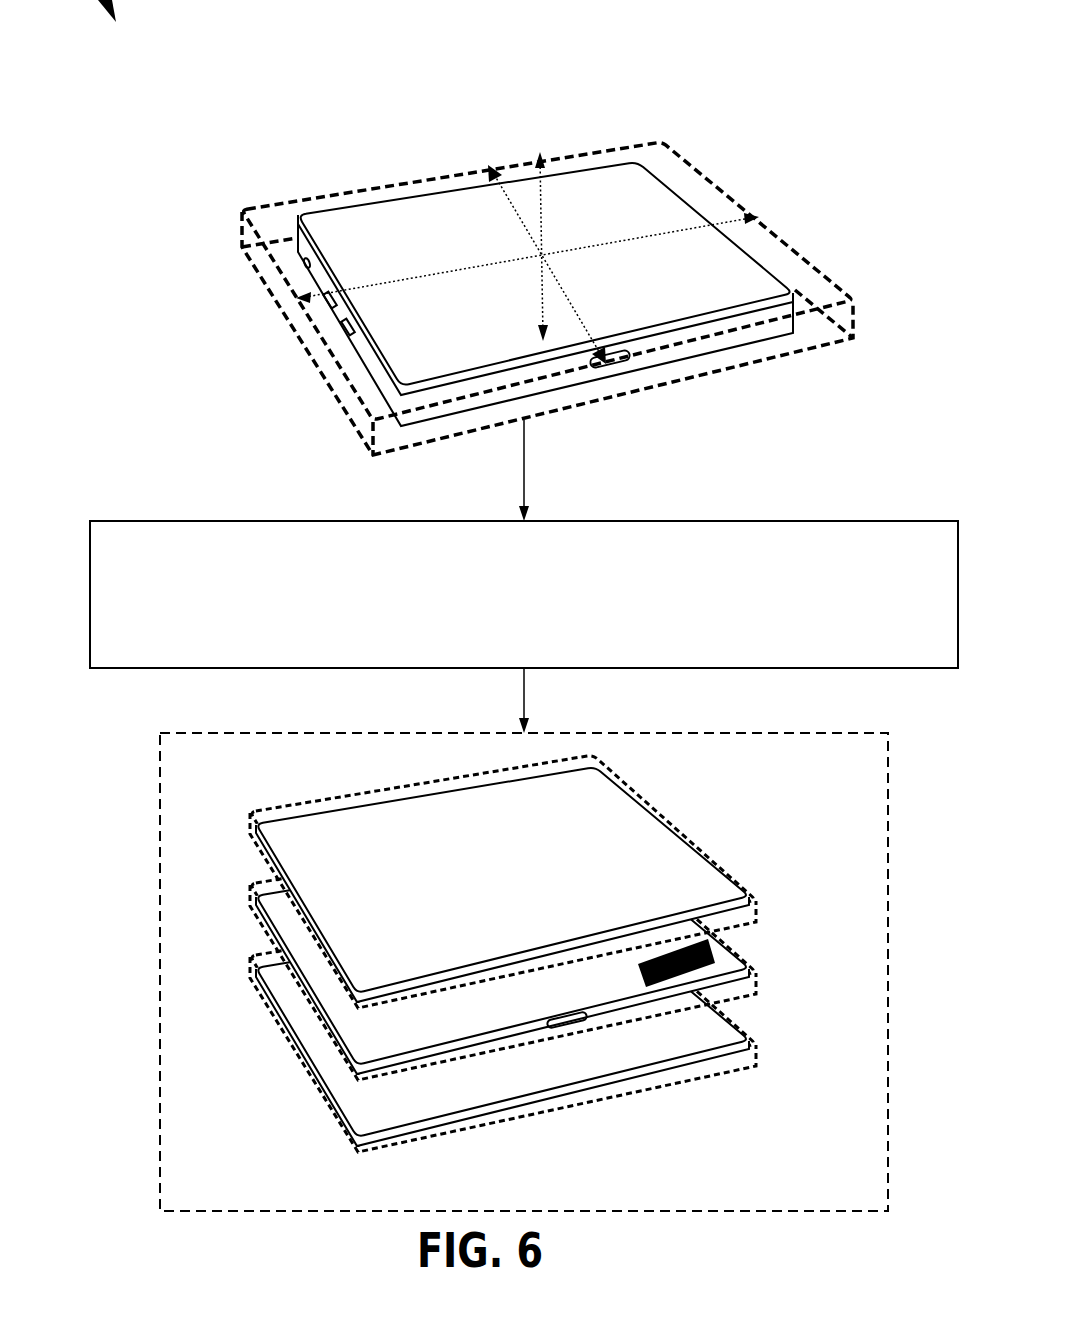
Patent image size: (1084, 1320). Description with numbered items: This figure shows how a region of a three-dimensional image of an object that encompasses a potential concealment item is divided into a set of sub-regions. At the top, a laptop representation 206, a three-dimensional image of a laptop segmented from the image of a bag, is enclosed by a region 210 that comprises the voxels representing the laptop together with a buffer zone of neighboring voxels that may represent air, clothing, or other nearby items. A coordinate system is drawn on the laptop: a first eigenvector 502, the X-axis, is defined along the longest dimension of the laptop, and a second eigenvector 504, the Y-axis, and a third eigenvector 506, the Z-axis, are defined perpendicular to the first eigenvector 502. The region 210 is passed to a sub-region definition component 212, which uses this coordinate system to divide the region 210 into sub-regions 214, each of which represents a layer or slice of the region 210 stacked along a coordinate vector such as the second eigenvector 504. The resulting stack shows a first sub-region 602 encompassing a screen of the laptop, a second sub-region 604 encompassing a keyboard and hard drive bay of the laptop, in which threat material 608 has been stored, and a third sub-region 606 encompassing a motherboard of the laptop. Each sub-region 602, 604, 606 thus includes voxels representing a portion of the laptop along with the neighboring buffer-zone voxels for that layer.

The laptop representation 206 is at (380, 353).
The region 210 is at (690, 162).
The sub-region definition component 212 is at (608, 520).
The sub-regions 214 is at (771, 733).
The first eigenvector 502 is at (577, 247).
The second eigenvector 504 is at (542, 212).
The third eigenvector 506 is at (513, 207).
The first sub-region 602 is at (688, 838).
The second sub-region 604 is at (727, 966).
The third sub-region 606 is at (712, 1038).
The threat material 608 is at (643, 976).